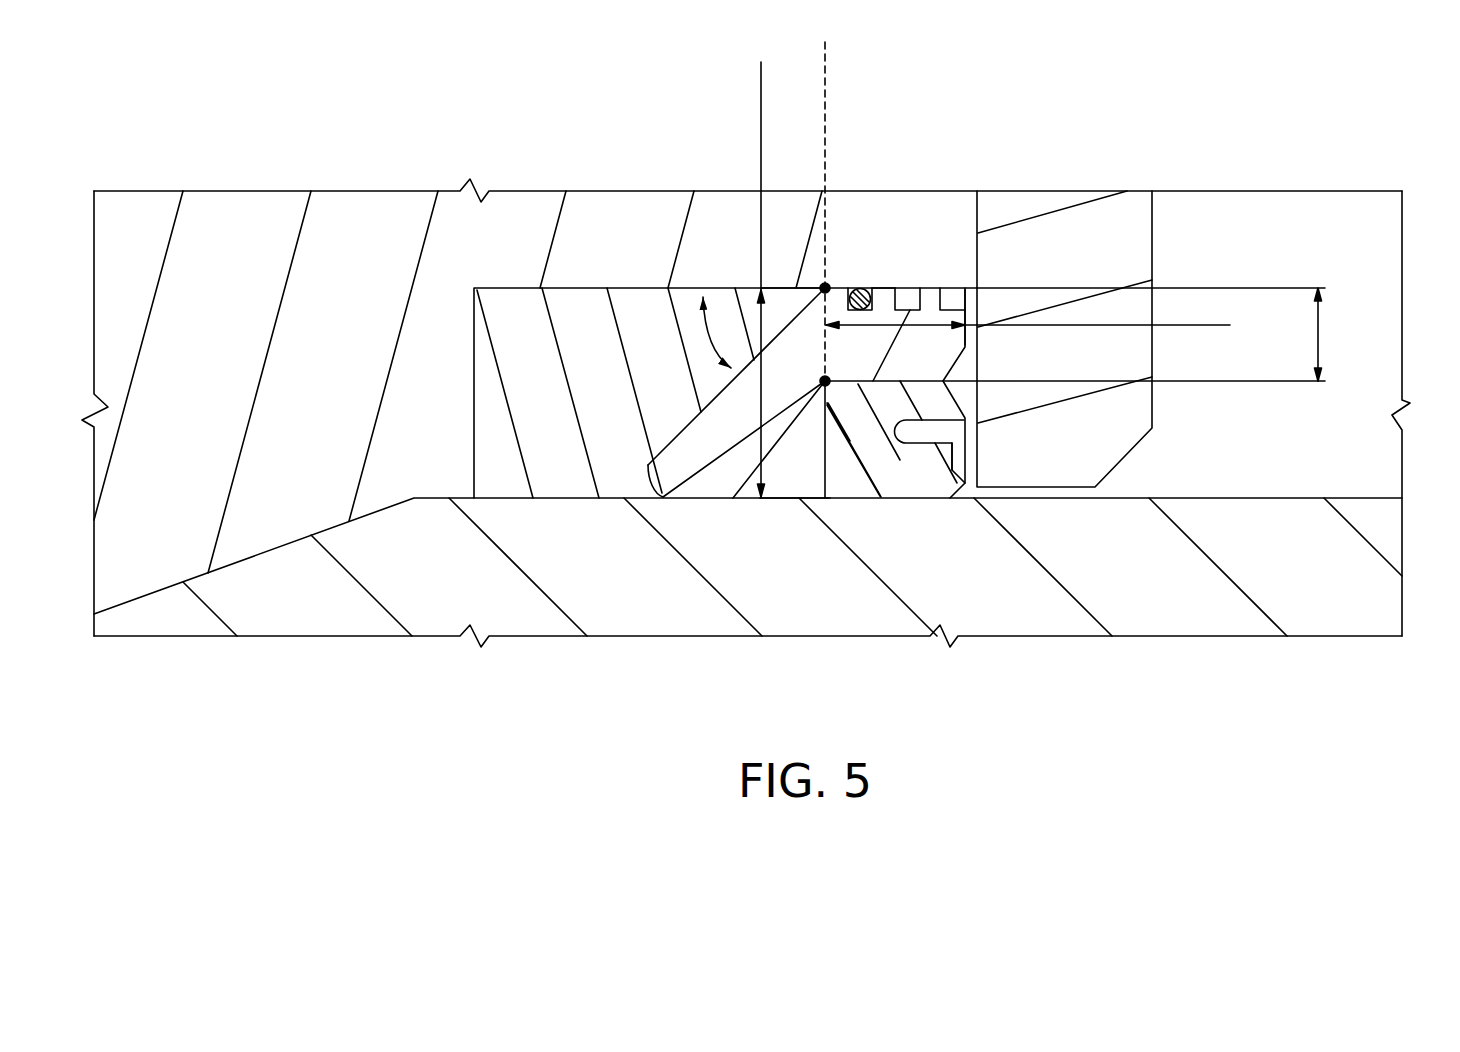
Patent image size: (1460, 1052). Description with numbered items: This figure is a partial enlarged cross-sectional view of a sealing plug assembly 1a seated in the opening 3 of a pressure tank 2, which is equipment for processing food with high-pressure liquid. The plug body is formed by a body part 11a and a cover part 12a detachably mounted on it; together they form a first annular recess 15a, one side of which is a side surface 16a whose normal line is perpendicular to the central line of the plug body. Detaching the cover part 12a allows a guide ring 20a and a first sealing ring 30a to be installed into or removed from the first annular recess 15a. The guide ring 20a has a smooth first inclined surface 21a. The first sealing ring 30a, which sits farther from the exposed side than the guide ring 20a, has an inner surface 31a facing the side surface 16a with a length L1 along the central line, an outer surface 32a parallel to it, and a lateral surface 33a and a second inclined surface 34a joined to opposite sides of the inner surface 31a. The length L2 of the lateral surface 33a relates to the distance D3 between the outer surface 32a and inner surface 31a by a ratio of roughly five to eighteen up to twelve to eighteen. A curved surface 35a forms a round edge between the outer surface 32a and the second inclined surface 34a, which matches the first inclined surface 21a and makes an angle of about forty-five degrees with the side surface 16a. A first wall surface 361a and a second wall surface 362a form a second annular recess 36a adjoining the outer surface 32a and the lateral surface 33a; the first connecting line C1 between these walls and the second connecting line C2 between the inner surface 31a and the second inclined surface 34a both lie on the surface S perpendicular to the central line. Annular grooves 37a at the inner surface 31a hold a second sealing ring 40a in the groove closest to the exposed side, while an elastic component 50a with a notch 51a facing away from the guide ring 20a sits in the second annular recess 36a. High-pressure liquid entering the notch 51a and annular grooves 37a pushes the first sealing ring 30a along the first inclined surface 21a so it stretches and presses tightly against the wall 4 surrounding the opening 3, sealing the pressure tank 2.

The sealing plug assembly 1a is at (259, 176).
The body part 11a is at (614, 210).
The cover part 12a is at (1065, 235).
The pressure tank 2 is at (1175, 607).
The opening 3 is at (1295, 412).
The wall 4 is at (1283, 496).
The first annular recess 15a is at (643, 494).
The side surface 16a is at (786, 300).
The guide ring 20a is at (645, 478).
The first inclined surface 21a is at (674, 449).
The first sealing ring 30a is at (833, 502).
The inner surface 31a is at (887, 283).
The outer surface 32a is at (792, 502).
The lateral surface 33a is at (969, 357).
The second inclined surface 34a is at (688, 422).
The curved surface 35a is at (537, 498).
The second annular recess 36a is at (841, 465).
The first wall surface 361a is at (875, 490).
The second wall surface 362a is at (858, 384).
The annular grooves 37a is at (908, 287).
The second sealing ring 40a is at (862, 288).
The elastic component 50a is at (967, 500).
The notch 51a is at (938, 432).
The distance D3 is at (745, 279).
The surface S is at (825, 195).
The first connecting line C1 is at (825, 381).
The second connecting line C2 is at (826, 288).
The length L1 is at (1028, 310).
The length L2 is at (1151, 334).